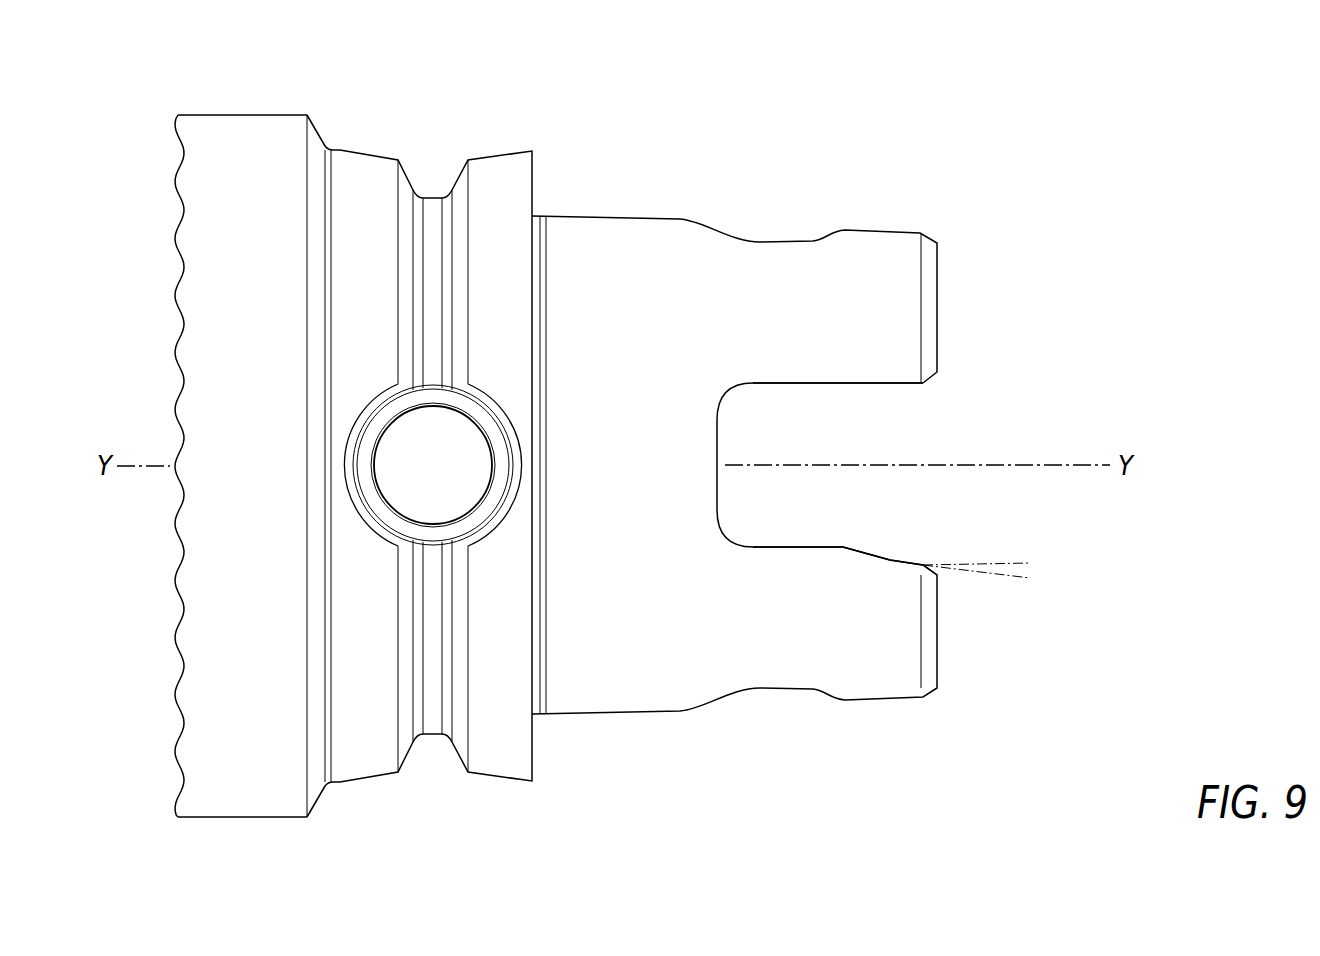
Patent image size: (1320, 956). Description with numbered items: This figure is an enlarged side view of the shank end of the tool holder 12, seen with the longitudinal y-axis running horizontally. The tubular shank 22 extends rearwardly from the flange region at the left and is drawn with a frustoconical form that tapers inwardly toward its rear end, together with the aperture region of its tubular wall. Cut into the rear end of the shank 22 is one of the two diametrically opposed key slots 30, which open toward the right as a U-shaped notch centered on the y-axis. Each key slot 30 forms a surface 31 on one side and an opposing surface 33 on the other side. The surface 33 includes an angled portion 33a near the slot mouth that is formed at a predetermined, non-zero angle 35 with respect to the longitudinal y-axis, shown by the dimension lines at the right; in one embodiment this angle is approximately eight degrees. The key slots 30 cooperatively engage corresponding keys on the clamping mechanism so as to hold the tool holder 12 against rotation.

The tool holder 12 is at (945, 108).
The tubular shank 22 is at (593, 215).
The key slot 30 is at (887, 432).
The surface 31 is at (811, 397).
The opposing surface 33 is at (803, 542).
The angled portion 33a is at (888, 553).
The angle 35 is at (1005, 622).